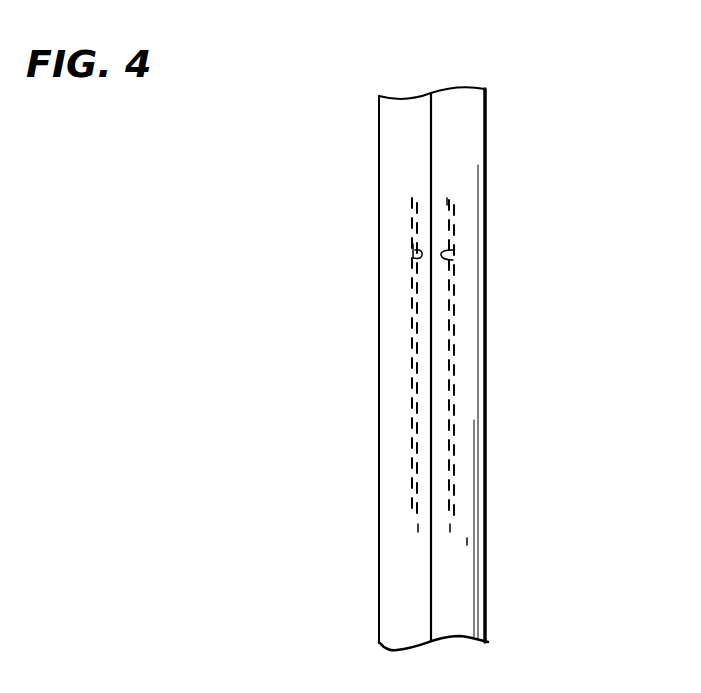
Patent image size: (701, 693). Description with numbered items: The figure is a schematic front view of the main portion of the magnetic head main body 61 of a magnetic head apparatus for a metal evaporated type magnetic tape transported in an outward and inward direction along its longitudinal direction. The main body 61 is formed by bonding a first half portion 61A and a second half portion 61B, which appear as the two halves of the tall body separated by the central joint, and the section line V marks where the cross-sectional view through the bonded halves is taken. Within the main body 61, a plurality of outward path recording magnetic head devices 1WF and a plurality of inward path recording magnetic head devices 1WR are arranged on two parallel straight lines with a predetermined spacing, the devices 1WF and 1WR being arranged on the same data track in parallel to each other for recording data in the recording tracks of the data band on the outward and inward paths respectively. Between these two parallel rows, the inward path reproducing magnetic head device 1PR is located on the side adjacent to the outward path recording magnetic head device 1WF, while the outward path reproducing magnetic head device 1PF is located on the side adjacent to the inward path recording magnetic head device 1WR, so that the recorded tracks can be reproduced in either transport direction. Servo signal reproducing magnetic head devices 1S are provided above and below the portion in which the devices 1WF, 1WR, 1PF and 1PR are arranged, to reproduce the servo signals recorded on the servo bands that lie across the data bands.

The magnetic head main body 61 is at (485, 88).
The first half portion 61A is at (472, 125).
The second half portion 61B is at (392, 131).
The servo signal reproducing magnetic head device 1S is at (447, 202).
The inward path recording magnetic head device 1WR is at (410, 247).
The outward path recording magnetic head device 1WF is at (453, 247).
The outward path reproducing magnetic head device 1PF is at (413, 257).
The inward path reproducing magnetic head device 1PR is at (450, 256).
The section line V- V is at (375, 347).